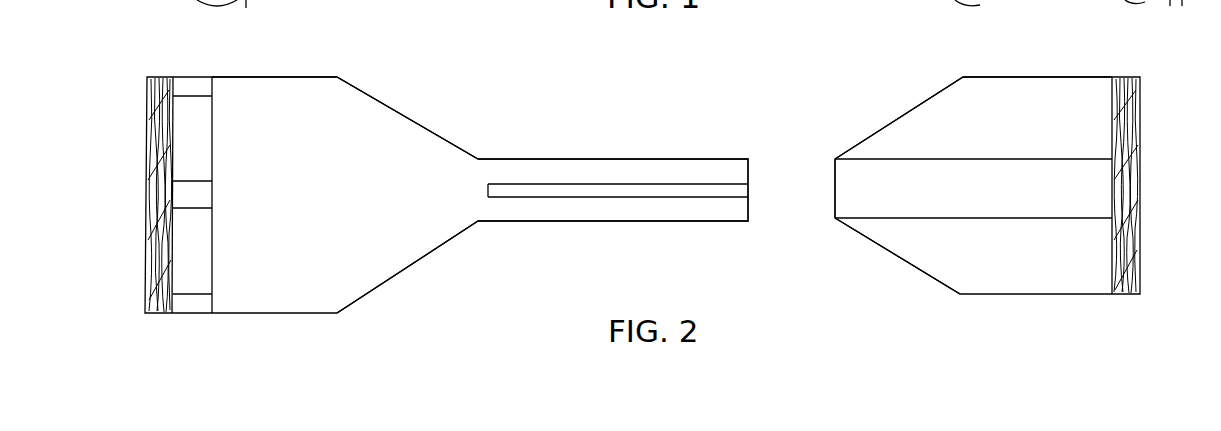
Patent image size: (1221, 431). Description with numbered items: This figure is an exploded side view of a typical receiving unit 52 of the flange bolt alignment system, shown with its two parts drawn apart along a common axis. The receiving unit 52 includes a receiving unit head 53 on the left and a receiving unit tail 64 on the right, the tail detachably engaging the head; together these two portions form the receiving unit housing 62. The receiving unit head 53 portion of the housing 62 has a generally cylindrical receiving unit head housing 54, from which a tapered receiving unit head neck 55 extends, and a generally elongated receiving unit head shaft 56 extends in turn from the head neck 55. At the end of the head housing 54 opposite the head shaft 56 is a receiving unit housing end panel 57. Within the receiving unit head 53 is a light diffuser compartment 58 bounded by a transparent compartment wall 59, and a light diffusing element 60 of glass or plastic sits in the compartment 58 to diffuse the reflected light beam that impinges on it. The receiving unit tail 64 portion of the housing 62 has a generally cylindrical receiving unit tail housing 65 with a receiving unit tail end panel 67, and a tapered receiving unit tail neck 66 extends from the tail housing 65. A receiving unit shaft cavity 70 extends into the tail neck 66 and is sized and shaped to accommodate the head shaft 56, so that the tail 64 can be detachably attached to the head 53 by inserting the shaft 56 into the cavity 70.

The receiving unit 52 is at (711, 67).
The receiving unit head 53 is at (272, 77).
The receiving unit head housing 54 is at (318, 76).
The receiving unit head neck 55 is at (390, 103).
The receiving unit head shaft 56 is at (692, 159).
The receiving unit housing end panel 57 is at (152, 85).
The light diffuser compartment 58 is at (197, 92).
The transparent compartment wall 59 is at (212, 108).
The light diffusing element 60 is at (187, 188).
The receiving unit housing 62 is at (543, 137).
The receiving unit tail 64 is at (1030, 77).
The receiving unit tail housing 65 is at (993, 77).
The receiving unit tail neck 66 is at (898, 115).
The receiving unit tail end panel 67 is at (1140, 100).
The receiving unit shaft cavity 70 is at (858, 160).